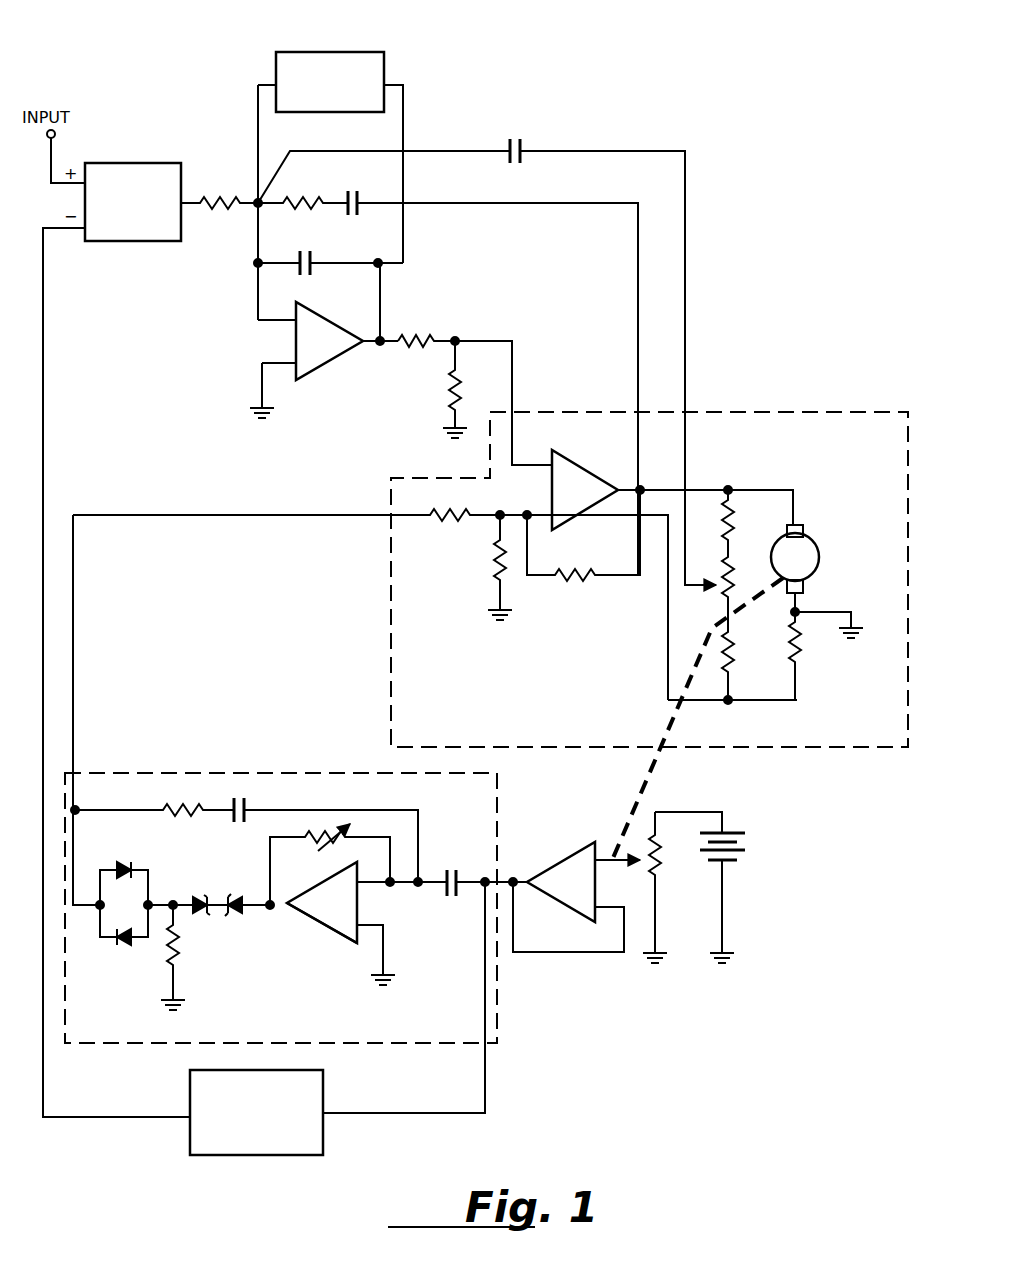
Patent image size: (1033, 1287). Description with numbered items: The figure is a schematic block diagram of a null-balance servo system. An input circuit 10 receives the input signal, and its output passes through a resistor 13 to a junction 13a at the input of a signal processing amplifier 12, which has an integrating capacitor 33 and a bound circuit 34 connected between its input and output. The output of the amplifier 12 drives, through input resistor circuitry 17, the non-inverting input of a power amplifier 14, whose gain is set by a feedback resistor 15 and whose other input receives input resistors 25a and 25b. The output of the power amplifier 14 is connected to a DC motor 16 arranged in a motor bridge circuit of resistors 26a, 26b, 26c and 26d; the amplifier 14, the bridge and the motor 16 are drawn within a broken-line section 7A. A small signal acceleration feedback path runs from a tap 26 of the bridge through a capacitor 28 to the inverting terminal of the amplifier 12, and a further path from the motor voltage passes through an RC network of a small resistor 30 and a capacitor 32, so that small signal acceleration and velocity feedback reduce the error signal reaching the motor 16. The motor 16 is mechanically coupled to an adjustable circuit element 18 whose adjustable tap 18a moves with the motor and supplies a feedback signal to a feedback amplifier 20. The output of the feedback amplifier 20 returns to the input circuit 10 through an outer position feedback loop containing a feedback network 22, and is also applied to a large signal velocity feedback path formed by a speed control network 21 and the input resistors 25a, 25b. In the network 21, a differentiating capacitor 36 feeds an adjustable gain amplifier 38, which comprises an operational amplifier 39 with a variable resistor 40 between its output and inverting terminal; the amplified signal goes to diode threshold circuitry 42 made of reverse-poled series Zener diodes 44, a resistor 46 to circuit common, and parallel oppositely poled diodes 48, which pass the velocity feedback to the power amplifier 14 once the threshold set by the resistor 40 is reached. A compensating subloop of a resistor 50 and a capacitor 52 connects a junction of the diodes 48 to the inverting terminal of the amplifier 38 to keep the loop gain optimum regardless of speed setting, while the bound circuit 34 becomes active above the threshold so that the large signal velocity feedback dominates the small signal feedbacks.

The inner loop servo section 7A is at (773, 410).
The input circuit 10 is at (150, 165).
The signal processing amplifier 12 is at (360, 300).
The resistor 13 is at (222, 212).
The summing junction 13a is at (254, 196).
The power amplifier 14 is at (617, 460).
The gain-determining feedback resistor 15 is at (567, 582).
The DC motor 16 is at (808, 552).
The input resistor circuitry 17 is at (412, 352).
The adjustable circuit element 18 is at (694, 851).
The adjustable tap 18a is at (627, 864).
The feedback amplifier 20 is at (565, 888).
The speed control network 21 is at (207, 772).
The feedback network 22 is at (313, 1090).
The input resistor 25a is at (448, 523).
The input resistor 25b is at (492, 562).
The tap 26 is at (732, 595).
The resistor 26a is at (736, 535).
The resistor 26b is at (737, 578).
The resistor 26c is at (733, 645).
The resistor 26d is at (800, 640).
The capacitor 28 is at (522, 140).
The small resistor 30 is at (303, 200).
The capacitor 32 is at (358, 195).
The integrating capacitor 33 is at (313, 262).
The bound circuit 34 is at (380, 52).
The differentiating capacitor 36 is at (440, 898).
The adjustable gain amplifier 38 is at (306, 880).
The operational amplifier 39 is at (323, 913).
The variable resistor 40 is at (314, 832).
The diode threshold circuitry 42 is at (152, 976).
The Zener diodes 44 is at (232, 893).
The resistor 46 is at (182, 948).
The diodes 48 is at (120, 866).
The resistor 50 is at (168, 806).
The capacitor 52 is at (248, 803).